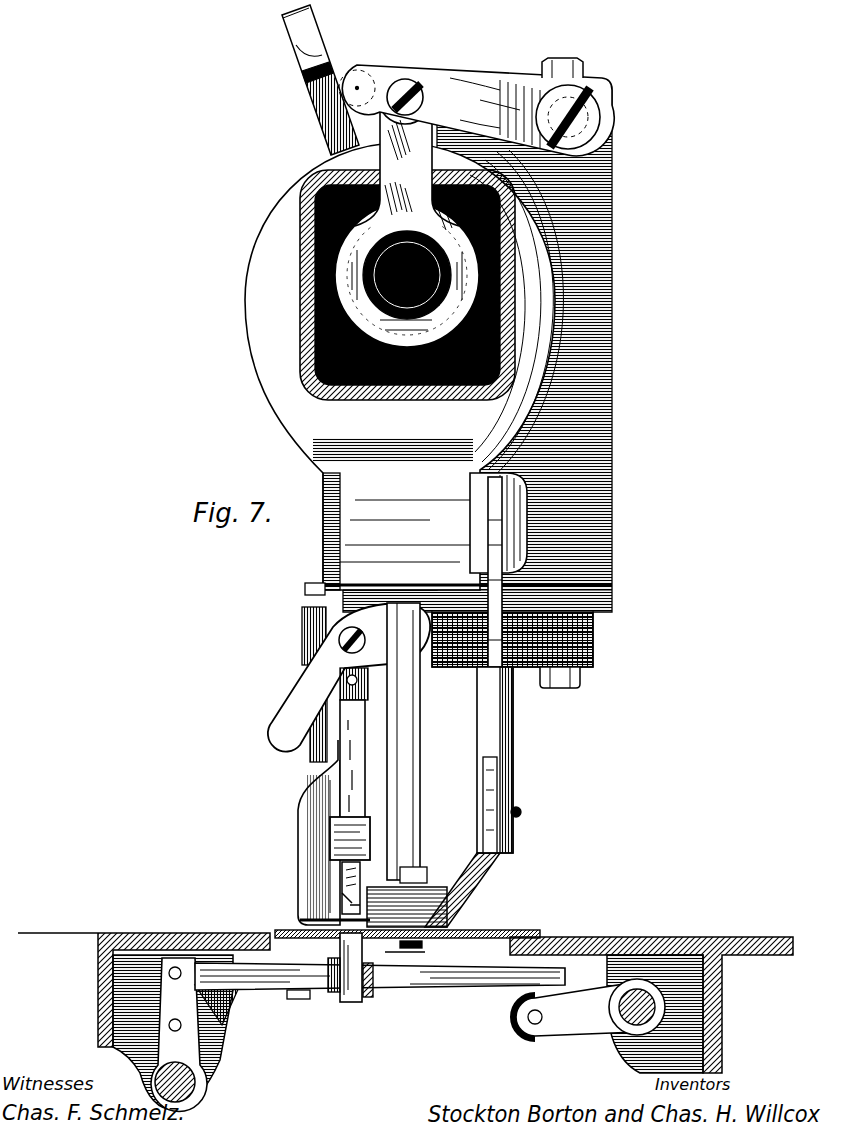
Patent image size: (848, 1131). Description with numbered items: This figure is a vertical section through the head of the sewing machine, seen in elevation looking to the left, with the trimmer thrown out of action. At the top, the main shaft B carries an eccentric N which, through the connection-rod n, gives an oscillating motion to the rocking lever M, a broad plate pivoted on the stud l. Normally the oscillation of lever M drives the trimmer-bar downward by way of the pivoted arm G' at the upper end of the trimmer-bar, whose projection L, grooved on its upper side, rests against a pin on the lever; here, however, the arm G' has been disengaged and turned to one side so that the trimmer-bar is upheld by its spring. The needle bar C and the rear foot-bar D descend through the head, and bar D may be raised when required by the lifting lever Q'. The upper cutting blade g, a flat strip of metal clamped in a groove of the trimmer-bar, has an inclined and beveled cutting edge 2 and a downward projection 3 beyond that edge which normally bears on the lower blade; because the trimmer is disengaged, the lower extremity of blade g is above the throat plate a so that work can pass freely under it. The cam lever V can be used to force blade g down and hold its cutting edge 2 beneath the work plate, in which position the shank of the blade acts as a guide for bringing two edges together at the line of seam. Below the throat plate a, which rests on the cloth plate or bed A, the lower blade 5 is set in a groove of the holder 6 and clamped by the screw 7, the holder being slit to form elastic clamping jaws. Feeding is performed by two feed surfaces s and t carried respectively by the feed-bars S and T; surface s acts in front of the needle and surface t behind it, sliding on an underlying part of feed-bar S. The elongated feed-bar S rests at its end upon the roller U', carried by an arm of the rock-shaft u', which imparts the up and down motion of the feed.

The projection L is at (322, 52).
The pivoted arm G' is at (319, 80).
The rocking lever M is at (478, 110).
The stud l is at (568, 117).
The nut h is at (565, 62).
The connection-rod n is at (407, 150).
The recess in frame I is at (407, 285).
The main shaft B is at (387, 271).
The eccentric N is at (407, 275).
The lifting lever Q' is at (501, 583).
The cam lever V is at (349, 678).
The needle bar C is at (407, 743).
The rear foot-bar D is at (510, 732).
The slide block K is at (350, 780).
The cutting blade g is at (356, 873).
The cutting edge 2 is at (346, 897).
The downward projection 3 is at (358, 906).
The throat plate a is at (407, 927).
The cloth plate A is at (405, 996).
The feed surface t is at (432, 945).
The feed surface s is at (405, 959).
The feed-bar S is at (380, 981).
The lower blade 5 is at (351, 967).
The holder 6 is at (373, 995).
The screw 7 is at (333, 992).
The feed-bar T is at (222, 995).
The roller U' is at (575, 1027).
The rock-shaft u' is at (637, 1032).